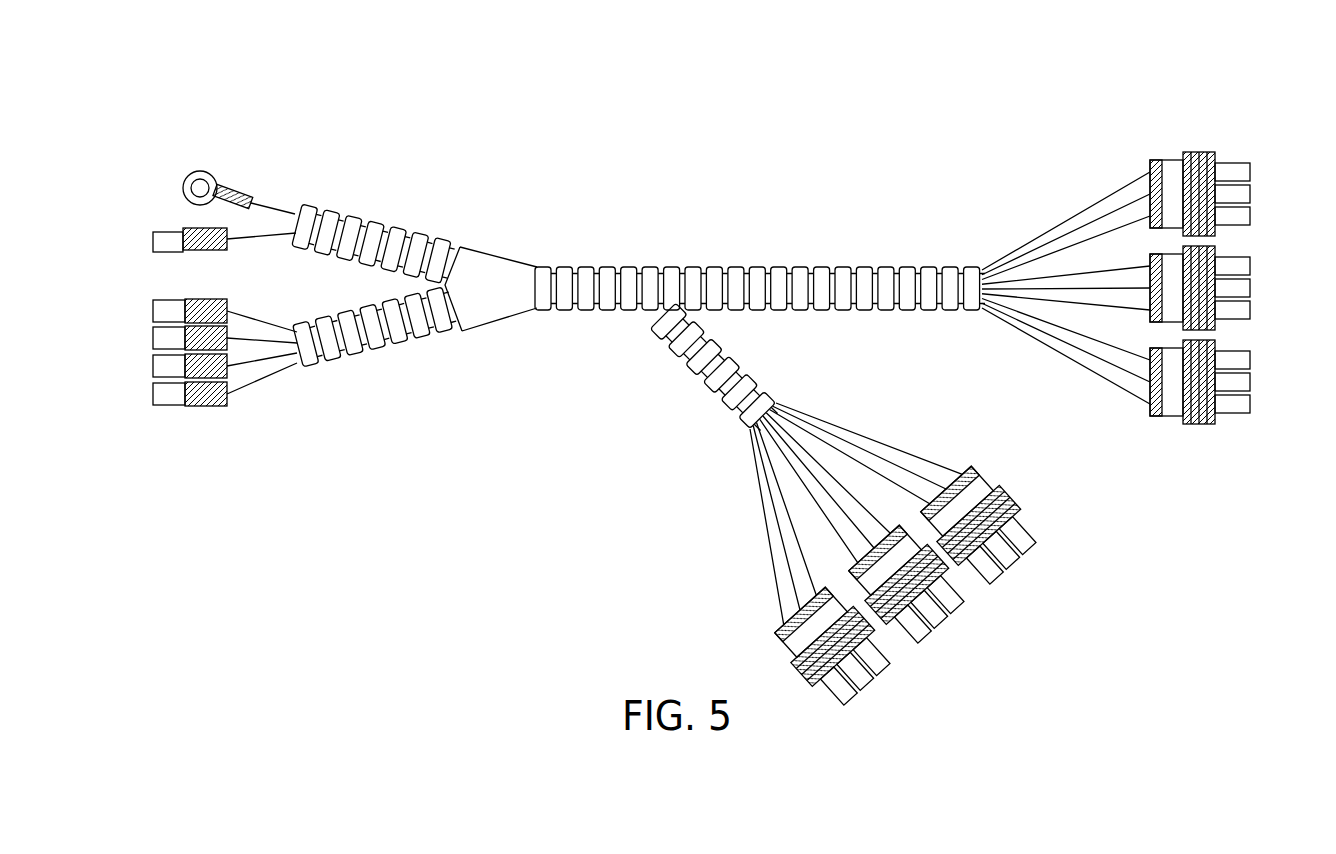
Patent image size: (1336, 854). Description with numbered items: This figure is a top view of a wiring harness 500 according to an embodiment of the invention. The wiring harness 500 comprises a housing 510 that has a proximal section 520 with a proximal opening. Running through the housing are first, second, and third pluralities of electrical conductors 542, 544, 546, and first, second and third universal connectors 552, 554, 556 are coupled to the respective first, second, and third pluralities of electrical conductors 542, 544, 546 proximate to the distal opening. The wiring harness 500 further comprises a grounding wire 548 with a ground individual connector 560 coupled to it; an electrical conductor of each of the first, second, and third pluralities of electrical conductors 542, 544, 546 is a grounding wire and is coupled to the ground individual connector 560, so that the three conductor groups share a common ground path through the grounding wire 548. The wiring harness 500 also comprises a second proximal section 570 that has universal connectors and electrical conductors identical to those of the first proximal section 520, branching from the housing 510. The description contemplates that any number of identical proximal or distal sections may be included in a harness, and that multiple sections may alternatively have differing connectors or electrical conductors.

The wiring harness 500 is at (783, 87).
The housing 510 is at (608, 292).
The proximal section 520 is at (677, 250).
The first plurality of electrical conductors 542 is at (1082, 198).
The second plurality of electrical conductors 544 is at (1055, 273).
The third plurality of electrical conductors 546 is at (1067, 353).
The grounding wire 548 is at (288, 211).
The first universal connector 552 is at (1212, 188).
The second universal connector 554 is at (1212, 287).
The third universal connector 556 is at (1212, 383).
The ground individual connector 560 is at (221, 184).
The second proximal section 570 is at (695, 518).